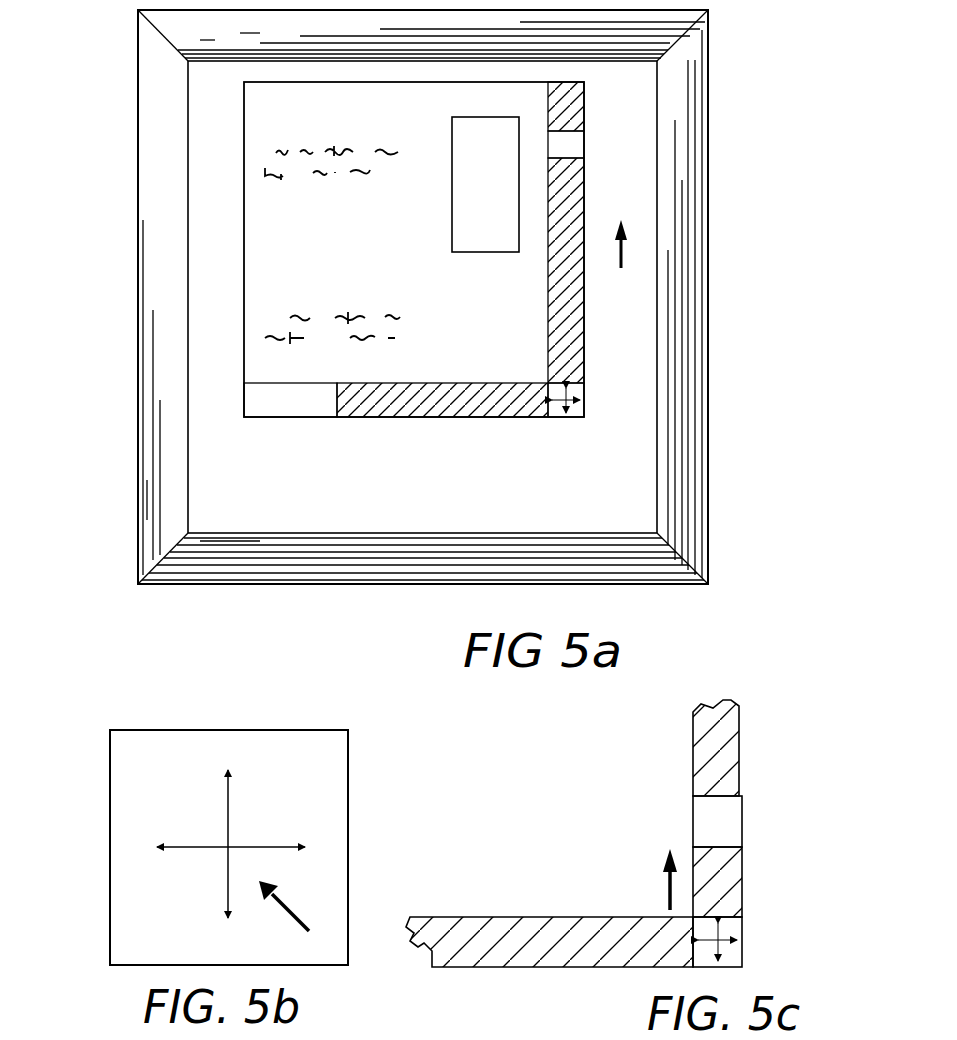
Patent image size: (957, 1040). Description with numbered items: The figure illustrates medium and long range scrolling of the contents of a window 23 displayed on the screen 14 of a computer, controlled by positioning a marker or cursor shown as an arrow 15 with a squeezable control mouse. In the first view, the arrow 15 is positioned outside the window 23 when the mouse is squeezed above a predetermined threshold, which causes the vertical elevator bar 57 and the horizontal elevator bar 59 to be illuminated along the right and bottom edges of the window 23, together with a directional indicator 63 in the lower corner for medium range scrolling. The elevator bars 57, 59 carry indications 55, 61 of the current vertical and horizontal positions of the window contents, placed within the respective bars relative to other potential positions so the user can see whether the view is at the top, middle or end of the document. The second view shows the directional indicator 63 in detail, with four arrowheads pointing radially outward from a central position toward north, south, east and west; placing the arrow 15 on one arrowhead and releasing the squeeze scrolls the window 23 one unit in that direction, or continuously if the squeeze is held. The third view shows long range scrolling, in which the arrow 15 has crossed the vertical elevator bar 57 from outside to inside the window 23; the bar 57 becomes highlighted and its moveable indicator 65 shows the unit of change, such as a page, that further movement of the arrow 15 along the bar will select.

In FIG. 5a, the screen 14 is at (244, 516).
In FIG. 5a, the window 23 is at (239, 190).
In FIG. 5c, the window 23 is at (498, 980).
In FIG. 5a, the current vertical position indicator 55 is at (585, 145).
In FIG. 5a, the vertical elevator bar 57 is at (587, 191).
In FIG. 5c, the vertical elevator bar 57 is at (743, 740).
In FIG. 5a, the horizontal elevator bar 59 is at (400, 419).
In FIG. 5c, the horizontal elevator bar 59 is at (608, 967).
In FIG. 5a, the current horizontal position indicator 61 is at (282, 419).
In FIG. 5a, the directional indicator 63 is at (574, 426).
In FIG. 5b, the directional indicator 63 is at (80, 817).
In FIG. 5c, the moveable indicator 65 is at (743, 835).
In FIG. 5a, the arrow 15 is at (620, 256).
In FIG. 5b, the arrow 15 is at (291, 908).
In FIG. 5c, the arrow 15 is at (667, 904).